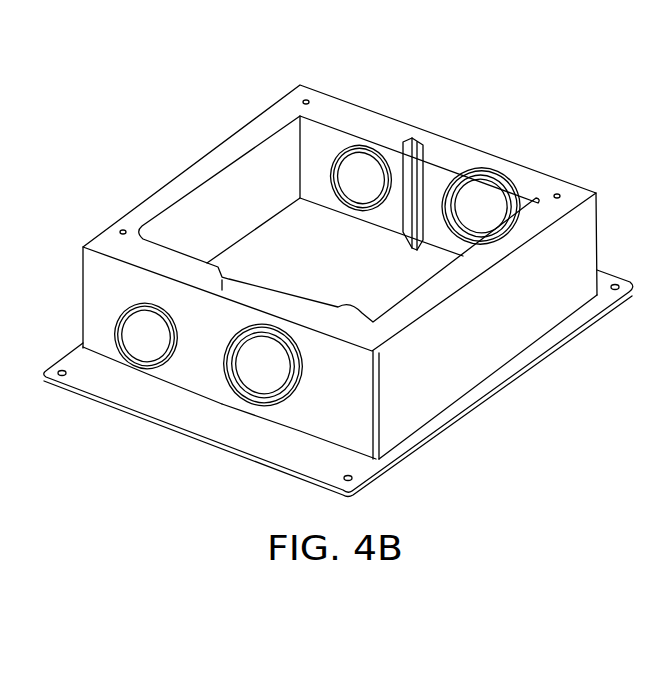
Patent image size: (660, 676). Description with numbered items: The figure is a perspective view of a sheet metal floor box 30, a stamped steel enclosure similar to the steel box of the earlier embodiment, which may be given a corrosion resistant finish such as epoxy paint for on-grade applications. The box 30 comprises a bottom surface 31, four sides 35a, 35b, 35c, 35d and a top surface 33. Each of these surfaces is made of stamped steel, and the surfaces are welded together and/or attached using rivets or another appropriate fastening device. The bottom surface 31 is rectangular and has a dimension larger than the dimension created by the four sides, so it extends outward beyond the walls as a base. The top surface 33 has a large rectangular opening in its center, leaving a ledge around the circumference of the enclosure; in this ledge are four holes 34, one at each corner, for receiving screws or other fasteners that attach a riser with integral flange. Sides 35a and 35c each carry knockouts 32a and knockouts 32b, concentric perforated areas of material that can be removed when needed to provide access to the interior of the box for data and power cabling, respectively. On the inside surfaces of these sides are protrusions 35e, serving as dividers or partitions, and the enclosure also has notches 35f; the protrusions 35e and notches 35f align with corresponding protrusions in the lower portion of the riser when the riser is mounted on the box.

The box 30 is at (523, 328).
The bottom surface 31 is at (316, 271).
The knockouts 32a is at (272, 372).
The knockouts 32b is at (147, 340).
The top surface 33 is at (520, 232).
The holes 34 is at (120, 230).
The side 35a is at (207, 373).
The side 35b is at (428, 397).
The side 35c is at (475, 148).
The side 35d is at (190, 163).
The protrusion 35e is at (422, 155).
The notch 35f is at (222, 284).